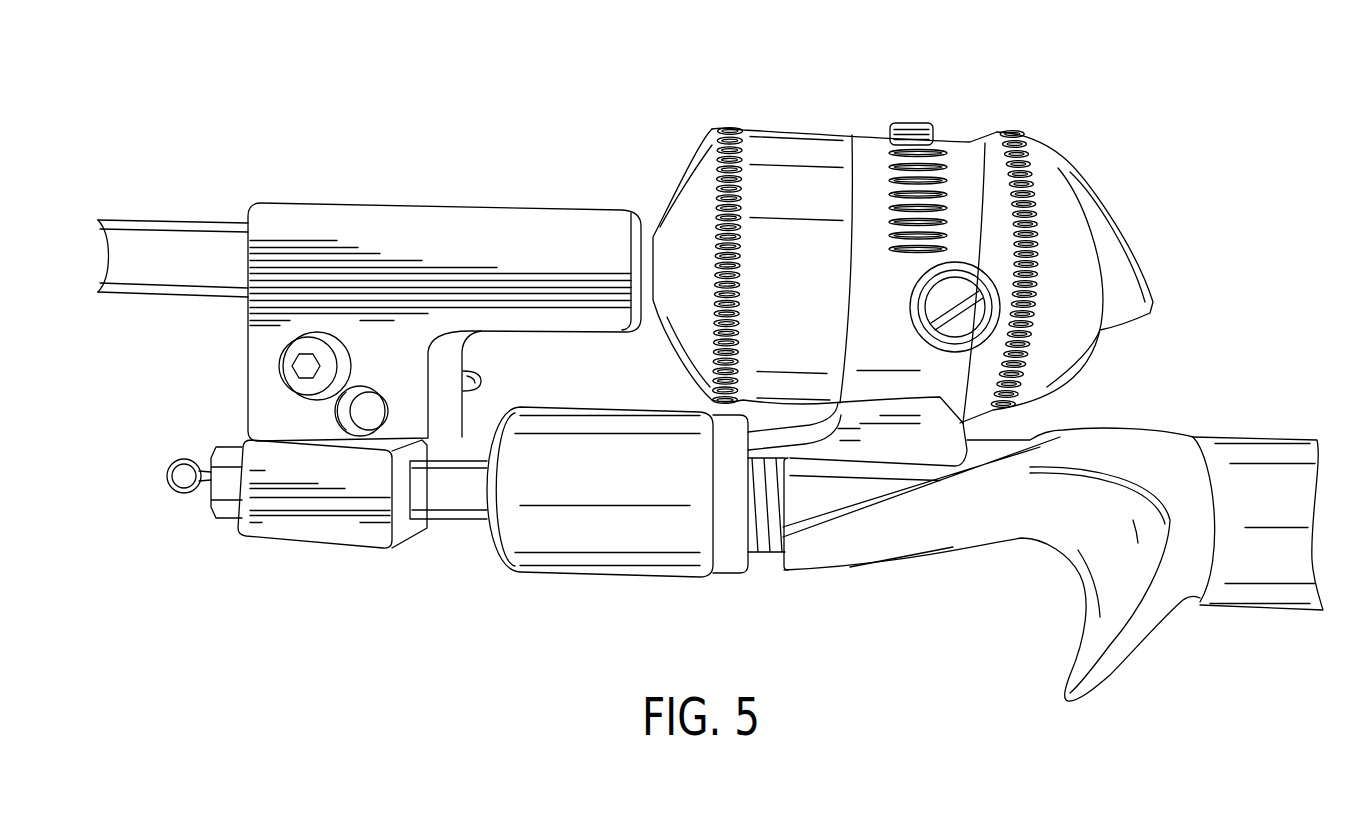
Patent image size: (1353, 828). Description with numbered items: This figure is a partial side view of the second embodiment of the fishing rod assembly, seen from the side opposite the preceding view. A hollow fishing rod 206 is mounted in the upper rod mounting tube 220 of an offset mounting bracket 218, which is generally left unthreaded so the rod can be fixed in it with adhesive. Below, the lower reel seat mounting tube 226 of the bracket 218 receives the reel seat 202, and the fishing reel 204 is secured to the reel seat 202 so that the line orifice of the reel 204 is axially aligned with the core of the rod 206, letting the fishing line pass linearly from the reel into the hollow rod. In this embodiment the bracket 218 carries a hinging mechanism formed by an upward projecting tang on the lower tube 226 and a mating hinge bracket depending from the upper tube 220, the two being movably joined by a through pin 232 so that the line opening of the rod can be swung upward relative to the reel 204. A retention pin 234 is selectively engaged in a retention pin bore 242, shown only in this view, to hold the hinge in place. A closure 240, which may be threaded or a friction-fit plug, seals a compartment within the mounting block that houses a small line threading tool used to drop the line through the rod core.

The reel seat 202 is at (861, 575).
The fishing reel 204 is at (957, 153).
The hollow fishing rod 206 is at (170, 225).
The offset mounting bracket 218 is at (535, 190).
The upper rod mounting tube 220 is at (330, 218).
The lower reel seat mounting tube 226 is at (320, 535).
The through pin 232 is at (285, 362).
The retention pin 234 is at (474, 376).
The closure 240 is at (172, 490).
The retention pin bore 242 is at (352, 407).